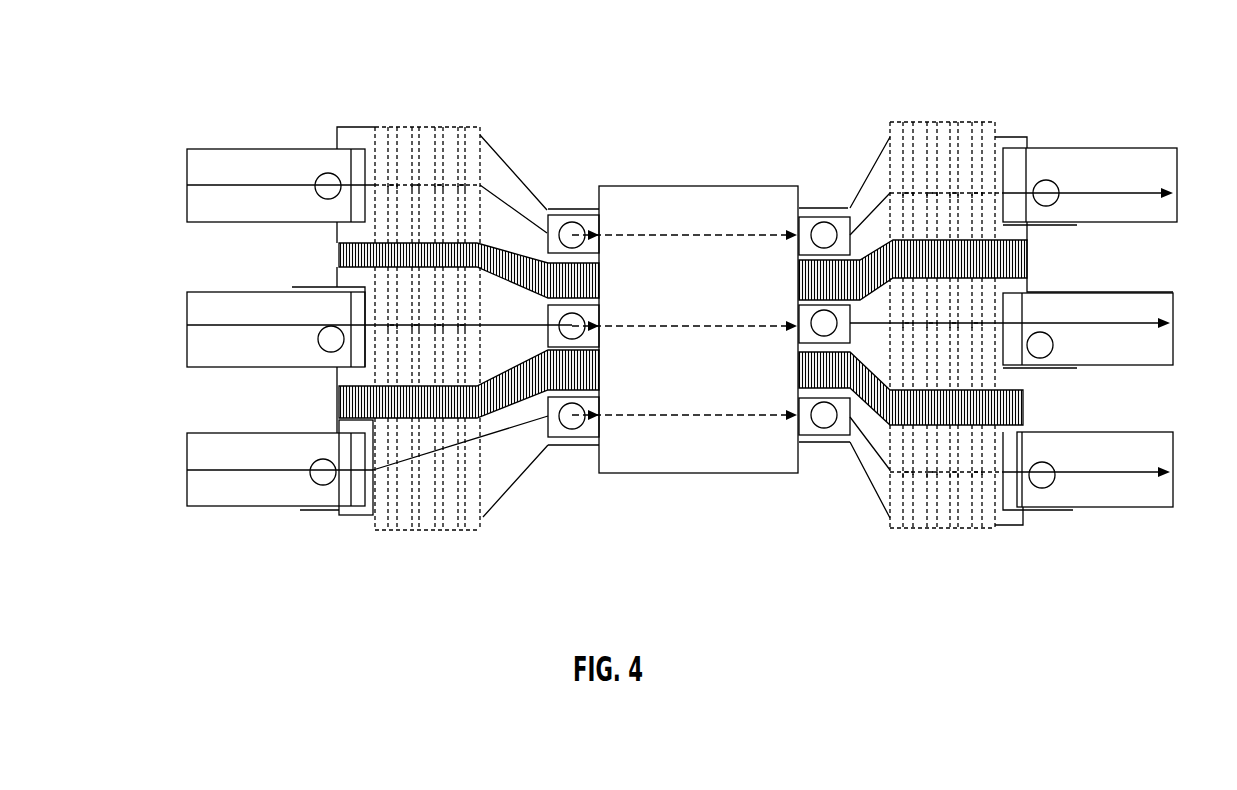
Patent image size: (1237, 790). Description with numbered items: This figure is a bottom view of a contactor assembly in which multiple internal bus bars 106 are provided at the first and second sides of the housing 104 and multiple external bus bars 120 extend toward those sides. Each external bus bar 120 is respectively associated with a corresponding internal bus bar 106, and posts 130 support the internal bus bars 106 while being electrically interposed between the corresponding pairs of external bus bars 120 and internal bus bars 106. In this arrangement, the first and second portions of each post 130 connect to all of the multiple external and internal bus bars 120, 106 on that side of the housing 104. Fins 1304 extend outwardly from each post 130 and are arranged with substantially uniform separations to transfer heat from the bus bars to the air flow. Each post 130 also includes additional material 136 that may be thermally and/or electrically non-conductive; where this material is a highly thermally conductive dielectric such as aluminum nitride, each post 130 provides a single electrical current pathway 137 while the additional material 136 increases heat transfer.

The housing 104 is at (678, 186).
The internal bus bars 106 is at (567, 208).
The external bus bars 120 is at (238, 160).
The posts 130 is at (490, 157).
The fins 1304 is at (430, 127).
The additional material 136 is at (340, 252).
The electrical current pathway 137 is at (505, 207).